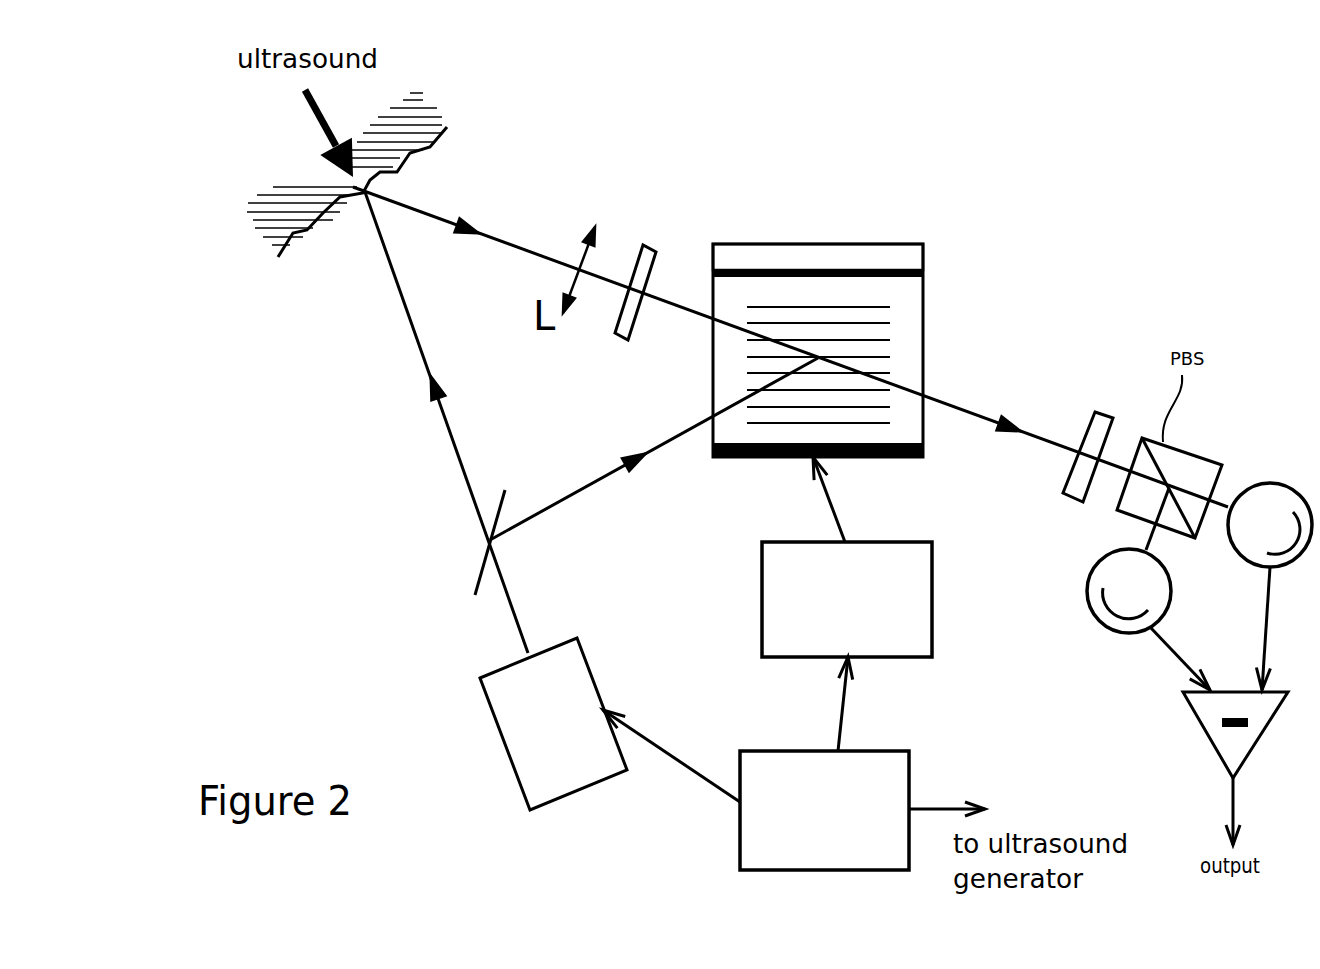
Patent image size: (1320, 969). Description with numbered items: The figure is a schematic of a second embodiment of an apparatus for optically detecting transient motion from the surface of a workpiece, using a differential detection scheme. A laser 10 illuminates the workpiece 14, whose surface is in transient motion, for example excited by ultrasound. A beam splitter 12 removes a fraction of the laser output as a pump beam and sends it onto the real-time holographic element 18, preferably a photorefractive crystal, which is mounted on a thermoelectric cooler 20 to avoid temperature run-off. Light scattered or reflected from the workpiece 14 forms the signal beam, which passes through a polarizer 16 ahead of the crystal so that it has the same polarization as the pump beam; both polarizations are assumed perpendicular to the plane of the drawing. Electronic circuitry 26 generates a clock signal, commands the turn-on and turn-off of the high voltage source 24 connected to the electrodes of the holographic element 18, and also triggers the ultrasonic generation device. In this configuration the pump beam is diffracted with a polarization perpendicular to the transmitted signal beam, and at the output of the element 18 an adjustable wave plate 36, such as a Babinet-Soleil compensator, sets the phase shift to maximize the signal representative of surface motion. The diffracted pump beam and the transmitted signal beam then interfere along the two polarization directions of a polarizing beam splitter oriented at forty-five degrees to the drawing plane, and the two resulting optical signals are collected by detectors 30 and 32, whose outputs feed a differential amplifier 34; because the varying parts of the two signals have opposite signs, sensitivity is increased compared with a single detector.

The laser 10 is at (483, 685).
The beam splitter 12 is at (487, 538).
The workpiece 14 is at (353, 187).
The polarizer 16 is at (615, 333).
The real-time holographic element 18 is at (917, 313).
The thermoelectric cooler 20 is at (843, 250).
The high voltage source 24 is at (932, 627).
The electronic circuitry 26 is at (780, 867).
The detector 30 is at (1143, 630).
The detector 32 is at (1273, 482).
The differential amplifier 34 is at (1213, 750).
The adjustable wave plate 36 is at (1100, 410).